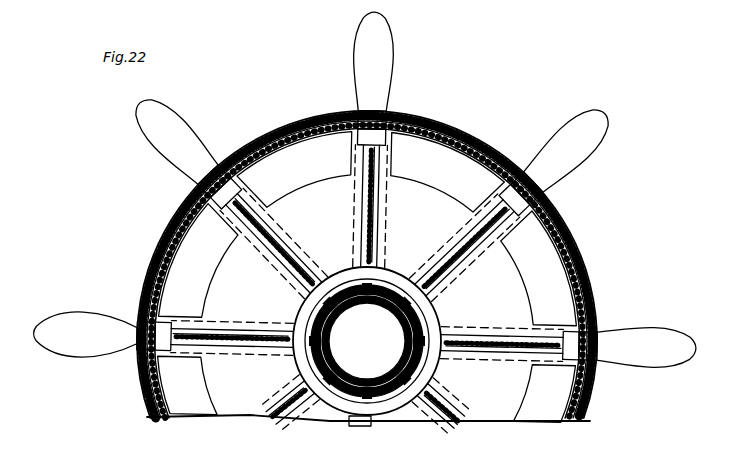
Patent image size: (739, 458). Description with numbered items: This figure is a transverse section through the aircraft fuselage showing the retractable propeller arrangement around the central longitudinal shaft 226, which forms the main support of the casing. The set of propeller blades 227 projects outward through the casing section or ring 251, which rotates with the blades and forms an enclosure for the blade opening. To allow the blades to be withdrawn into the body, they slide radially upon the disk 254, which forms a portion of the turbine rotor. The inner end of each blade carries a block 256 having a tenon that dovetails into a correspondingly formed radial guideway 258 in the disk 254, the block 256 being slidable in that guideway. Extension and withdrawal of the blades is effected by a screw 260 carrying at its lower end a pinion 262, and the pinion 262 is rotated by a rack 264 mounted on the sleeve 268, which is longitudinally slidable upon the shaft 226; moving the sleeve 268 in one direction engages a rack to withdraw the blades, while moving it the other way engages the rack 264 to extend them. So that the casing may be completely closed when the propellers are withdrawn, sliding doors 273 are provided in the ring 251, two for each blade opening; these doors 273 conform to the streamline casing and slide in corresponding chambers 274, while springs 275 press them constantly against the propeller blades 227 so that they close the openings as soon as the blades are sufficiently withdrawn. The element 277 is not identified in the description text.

The central longitudinal shaft 226 is at (375, 306).
The propeller blades 227 is at (170, 114).
The casing section or ring 251 is at (300, 120).
The disk 254 is at (215, 292).
The blocks 256 is at (225, 212).
The radial guideways 258 is at (352, 262).
The screws 260 is at (272, 268).
The pinions 262 is at (399, 353).
The rack 264 is at (352, 398).
The sleeve 268 is at (333, 342).
The sliding doors 273 is at (194, 196).
The chambers 274 is at (224, 165).
The springs 275 is at (280, 130).
The left blade 277 is at (70, 328).